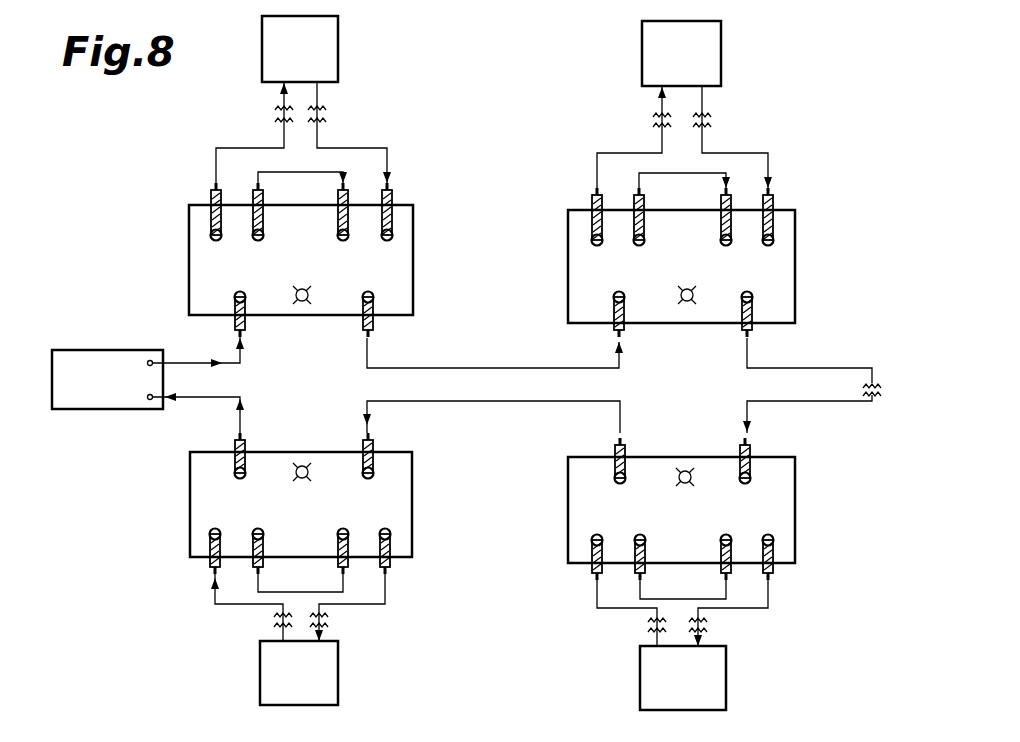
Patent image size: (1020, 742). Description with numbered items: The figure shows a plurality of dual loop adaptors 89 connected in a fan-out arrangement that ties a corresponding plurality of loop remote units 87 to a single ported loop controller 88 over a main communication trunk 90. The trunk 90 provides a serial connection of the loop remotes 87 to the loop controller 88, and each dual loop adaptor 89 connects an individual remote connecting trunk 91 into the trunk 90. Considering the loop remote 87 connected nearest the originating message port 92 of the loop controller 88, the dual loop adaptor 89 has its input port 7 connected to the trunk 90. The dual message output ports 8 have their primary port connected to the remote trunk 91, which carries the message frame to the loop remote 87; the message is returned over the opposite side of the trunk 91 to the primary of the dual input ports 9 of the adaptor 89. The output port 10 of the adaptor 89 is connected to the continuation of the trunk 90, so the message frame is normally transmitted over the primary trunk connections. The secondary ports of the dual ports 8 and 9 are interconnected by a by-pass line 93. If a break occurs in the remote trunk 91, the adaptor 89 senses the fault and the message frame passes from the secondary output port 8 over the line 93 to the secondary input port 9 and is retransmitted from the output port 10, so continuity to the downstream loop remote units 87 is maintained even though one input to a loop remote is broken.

The input port 7 is at (236, 292).
The dual message output ports 8 is at (245, 251).
The dual input ports 9 is at (344, 241).
The output port 10 is at (392, 277).
The loop remote unit 87 is at (340, 57).
The loop controller 88 is at (82, 411).
The dual loop adaptor 89 is at (413, 255).
The main trunk 90 is at (246, 395).
The remote connecting trunk 91 is at (296, 142).
The originating message port 92 is at (151, 358).
The by-pass line 93 is at (318, 172).